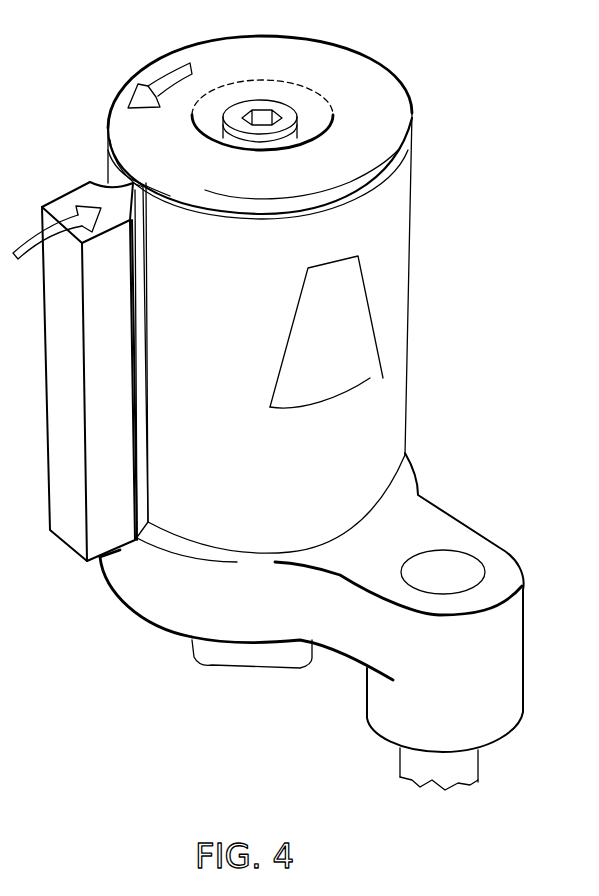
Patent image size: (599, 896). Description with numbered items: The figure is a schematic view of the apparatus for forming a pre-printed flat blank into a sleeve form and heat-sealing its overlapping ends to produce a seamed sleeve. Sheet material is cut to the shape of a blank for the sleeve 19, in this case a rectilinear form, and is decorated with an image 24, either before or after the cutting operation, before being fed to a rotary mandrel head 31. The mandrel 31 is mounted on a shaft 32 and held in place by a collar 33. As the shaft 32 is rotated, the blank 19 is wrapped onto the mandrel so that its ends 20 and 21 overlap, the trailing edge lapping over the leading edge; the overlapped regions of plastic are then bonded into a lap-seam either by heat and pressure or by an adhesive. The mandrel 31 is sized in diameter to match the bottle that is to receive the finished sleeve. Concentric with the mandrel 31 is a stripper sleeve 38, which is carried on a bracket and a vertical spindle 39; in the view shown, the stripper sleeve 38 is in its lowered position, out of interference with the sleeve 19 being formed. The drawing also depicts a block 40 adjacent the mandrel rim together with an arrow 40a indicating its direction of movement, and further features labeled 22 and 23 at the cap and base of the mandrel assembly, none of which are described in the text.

The sleeve 19 is at (217, 449).
The end 20 is at (138, 163).
The end 21 is at (155, 188).
The cap 22 is at (384, 66).
The base flange 23 is at (248, 552).
The image 24 is at (370, 378).
The rotary mandrel head 31 is at (280, 182).
The shaft 32 is at (232, 660).
The collar 33 is at (285, 115).
The stripper sleeve 38 is at (412, 522).
The vertical spindle 39 is at (470, 783).
The block 40 is at (118, 376).
The direction arrow 40a is at (103, 182).